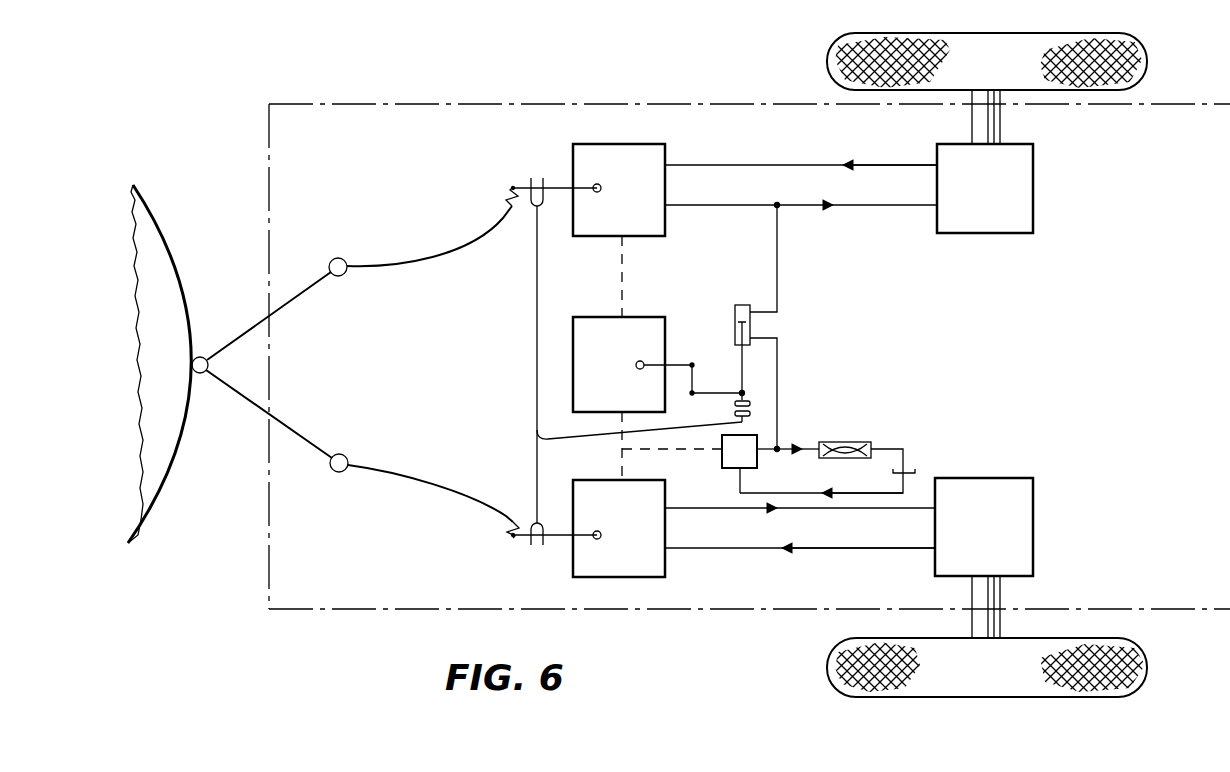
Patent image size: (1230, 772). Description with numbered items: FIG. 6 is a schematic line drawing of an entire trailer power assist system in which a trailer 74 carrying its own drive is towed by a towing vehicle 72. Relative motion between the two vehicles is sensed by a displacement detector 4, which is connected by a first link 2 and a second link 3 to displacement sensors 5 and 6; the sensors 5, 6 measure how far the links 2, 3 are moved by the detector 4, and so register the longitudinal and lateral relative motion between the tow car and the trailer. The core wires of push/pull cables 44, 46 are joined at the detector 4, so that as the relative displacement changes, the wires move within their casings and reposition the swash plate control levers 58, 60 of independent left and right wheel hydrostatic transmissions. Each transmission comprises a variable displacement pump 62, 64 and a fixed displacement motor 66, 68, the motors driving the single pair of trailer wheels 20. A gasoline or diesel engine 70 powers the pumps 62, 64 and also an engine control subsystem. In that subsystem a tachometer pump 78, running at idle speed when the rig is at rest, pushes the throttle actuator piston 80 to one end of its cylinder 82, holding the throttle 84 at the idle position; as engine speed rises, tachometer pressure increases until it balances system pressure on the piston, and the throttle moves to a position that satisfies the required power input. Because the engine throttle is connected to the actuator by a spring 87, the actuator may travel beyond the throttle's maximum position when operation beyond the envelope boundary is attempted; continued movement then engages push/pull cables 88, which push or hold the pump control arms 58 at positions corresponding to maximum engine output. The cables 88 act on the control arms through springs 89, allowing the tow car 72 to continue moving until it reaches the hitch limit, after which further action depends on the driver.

The link 2 is at (300, 292).
The link 3 is at (238, 404).
The displacement detector 4 is at (199, 356).
The displacement sensor 5 is at (345, 258).
The displacement sensor 6 is at (339, 474).
The wheels 20 is at (1147, 82).
The push/pull cable 44 is at (455, 256).
The push/pull cable 46 is at (408, 482).
The swash plate control lever 58 is at (560, 180).
The swash plate control lever 60 is at (566, 545).
The variable displacement pump 62 is at (658, 228).
The variable displacement pump 64 is at (652, 565).
The fixed displacement motor 66 is at (1012, 232).
The fixed displacement motor 68 is at (1033, 522).
The engine 70 is at (640, 322).
The towing vehicle 72 is at (150, 530).
The trailer 74 is at (268, 570).
The tachometer pump 78 is at (724, 460).
The throttle actuator piston 80 is at (863, 441).
The cylinder 82 is at (741, 305).
The throttle 84 is at (680, 362).
The spring 87 is at (696, 378).
The push/pull cables 88 is at (745, 422).
The springs 89 is at (506, 200).